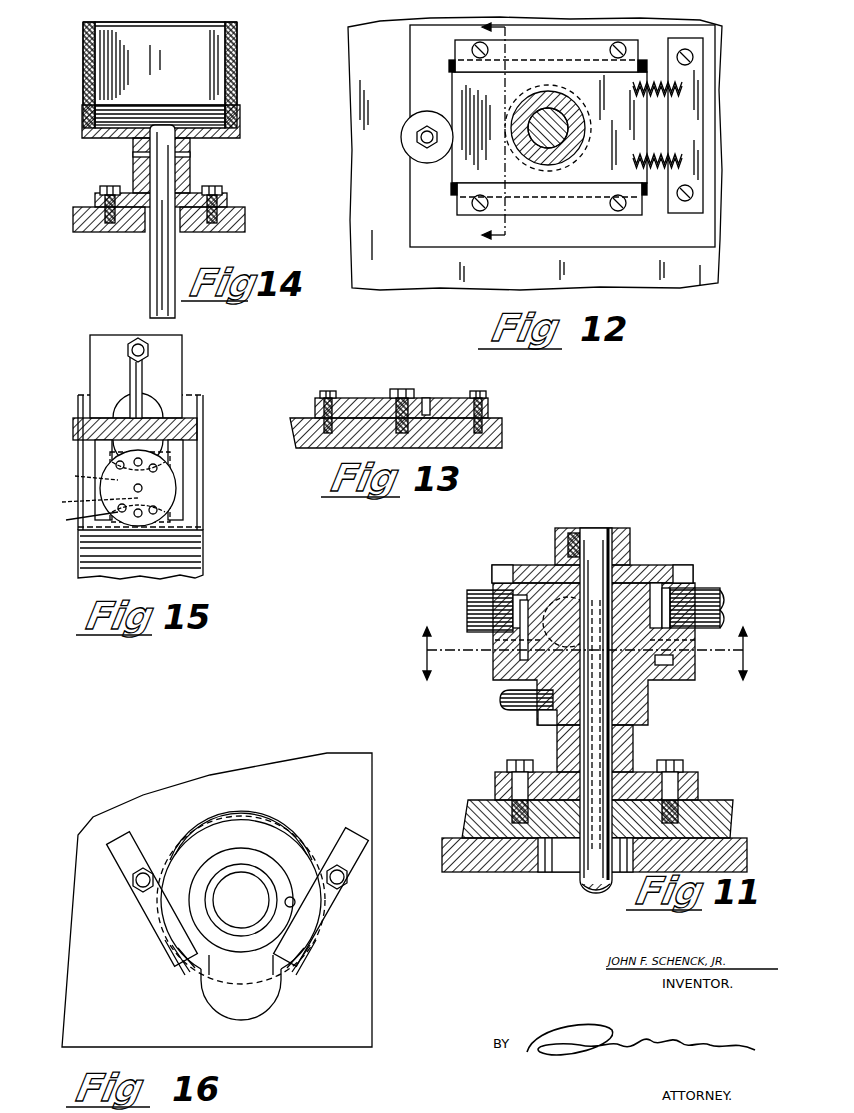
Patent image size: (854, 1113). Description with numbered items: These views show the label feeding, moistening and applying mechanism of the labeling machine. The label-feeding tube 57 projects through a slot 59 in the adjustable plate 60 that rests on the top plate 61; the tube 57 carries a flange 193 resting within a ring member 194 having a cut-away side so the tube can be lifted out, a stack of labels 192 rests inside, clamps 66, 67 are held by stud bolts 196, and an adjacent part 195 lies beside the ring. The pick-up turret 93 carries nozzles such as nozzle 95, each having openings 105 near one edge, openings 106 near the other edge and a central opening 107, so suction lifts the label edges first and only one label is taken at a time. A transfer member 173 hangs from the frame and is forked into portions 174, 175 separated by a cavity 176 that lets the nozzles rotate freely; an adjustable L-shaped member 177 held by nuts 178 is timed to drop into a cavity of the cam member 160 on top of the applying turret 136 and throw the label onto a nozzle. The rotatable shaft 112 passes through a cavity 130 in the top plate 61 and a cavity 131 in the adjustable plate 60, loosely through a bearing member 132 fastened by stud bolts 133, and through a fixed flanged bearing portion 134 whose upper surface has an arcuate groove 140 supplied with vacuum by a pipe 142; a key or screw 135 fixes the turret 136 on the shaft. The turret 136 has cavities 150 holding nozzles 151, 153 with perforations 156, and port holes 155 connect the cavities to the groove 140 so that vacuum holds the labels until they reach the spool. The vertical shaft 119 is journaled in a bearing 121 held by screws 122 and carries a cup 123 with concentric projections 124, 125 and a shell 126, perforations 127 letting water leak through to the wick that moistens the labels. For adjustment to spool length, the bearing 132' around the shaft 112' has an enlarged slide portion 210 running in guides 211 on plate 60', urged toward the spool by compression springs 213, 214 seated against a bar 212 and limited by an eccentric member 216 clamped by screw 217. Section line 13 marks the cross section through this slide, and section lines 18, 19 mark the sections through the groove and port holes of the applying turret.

In FIG. 16, the tube 57 is at (212, 922).
In FIG. 16, the slot 59 is at (250, 1002).
In FIG. 11, the adjustable plate 60 is at (594, 813).
In FIG. 12, the plate 60' is at (559, 136).
In FIG. 13, the plate 60' is at (415, 433).
In FIG. 14, the top plate 61 is at (245, 216).
In FIG. 12, the top plate 61 is at (355, 40).
In FIG. 11, the top plate 61 is at (740, 840).
In FIG. 16, the top plate 61 is at (270, 1040).
In FIG. 16, the clamp 66 is at (308, 925).
In FIG. 16, the clamp 67 is at (172, 938).
In FIG. 15, the pick-up turret 93 is at (200, 548).
In FIG. 15, the nozzle 95 is at (205, 528).
In FIG. 15, the openings 105 is at (172, 455).
In FIG. 15, the openings 106 is at (88, 500).
In FIG. 15, the central opening 107 is at (84, 473).
In FIG. 11, the rotatable shaft 112 is at (621, 696).
In FIG. 12, the shaft section 112' is at (567, 110).
In FIG. 14, the vertically disposed shaft 119 is at (176, 253).
In FIG. 14, the bearing 121 is at (188, 176).
In FIG. 14, the stud bolts 122 is at (112, 186).
In FIG. 14, the cup 123 is at (240, 132).
In FIG. 14, the concentric projection 124 is at (238, 105).
In FIG. 14, the concentric projection 125 is at (216, 112).
In FIG. 14, the shell member 126 is at (213, 38).
In FIG. 14, the perforations 127 is at (83, 80).
In FIG. 11, the cavity 130 is at (550, 870).
In FIG. 11, the cavity 131 is at (565, 868).
In FIG. 11, the bearing member 132 is at (587, 765).
In FIG. 12, the bearing 132' is at (565, 128).
In FIG. 11, the stud bolts 133 is at (520, 760).
In FIG. 11, the fixed flanged bearing portion 134 is at (676, 676).
In FIG. 11, the key or screw 135 is at (575, 533).
In FIG. 11, the turret 136 is at (625, 535).
In FIG. 11, the arcuate groove 140 is at (673, 660).
In FIG. 11, the pipe 142 is at (505, 700).
In FIG. 11, the cavities 150 is at (540, 570).
In FIG. 11, the nozzle 151 is at (705, 590).
In FIG. 11, the nozzle 153 is at (482, 590).
In FIG. 11, the port holes 155 is at (495, 640).
In FIG. 11, the perforations 156 is at (722, 608).
In FIG. 15, the cam member 160 is at (124, 418).
In FIG. 11, the cam member 160 is at (548, 565).
In FIG. 15, the member 173 is at (172, 382).
In FIG. 15, the fork portion 174 is at (184, 507).
In FIG. 15, the fork portion 175 is at (79, 520).
In FIG. 15, the cavity 176 is at (152, 414).
In FIG. 15, the adjustable L-shaped member 177 is at (143, 380).
In FIG. 15, the nut 178 is at (140, 340).
In FIG. 15, the labels 192 is at (176, 486).
In FIG. 16, the flange 193 is at (262, 845).
In FIG. 16, the ring member 194 is at (240, 822).
In FIG. 16, the inner ring 195 is at (292, 897).
In FIG. 16, the stud bolts 196 is at (147, 868).
In FIG. 12, the enlarged portion 210 is at (460, 78).
In FIG. 13, the enlarged portion 210 is at (458, 390).
In FIG. 12, the guides 211 is at (538, 38).
In FIG. 13, the guides 211 is at (327, 391).
In FIG. 12, the bar 212 is at (706, 150).
In FIG. 12, the compression spring 213 is at (650, 158).
In FIG. 12, the compression spring 214 is at (650, 96).
In FIG. 12, the adjustable eccentric member 216 is at (406, 124).
In FIG. 12, the clamping screw 217 is at (430, 125).
In FIG. 13, the clamping screw 217 is at (405, 389).
In FIG. 12, the section line 13 is at (481, 132).
In FIG. 11, the section line 18 is at (584, 665).
In FIG. 11, the section line 19 is at (584, 615).